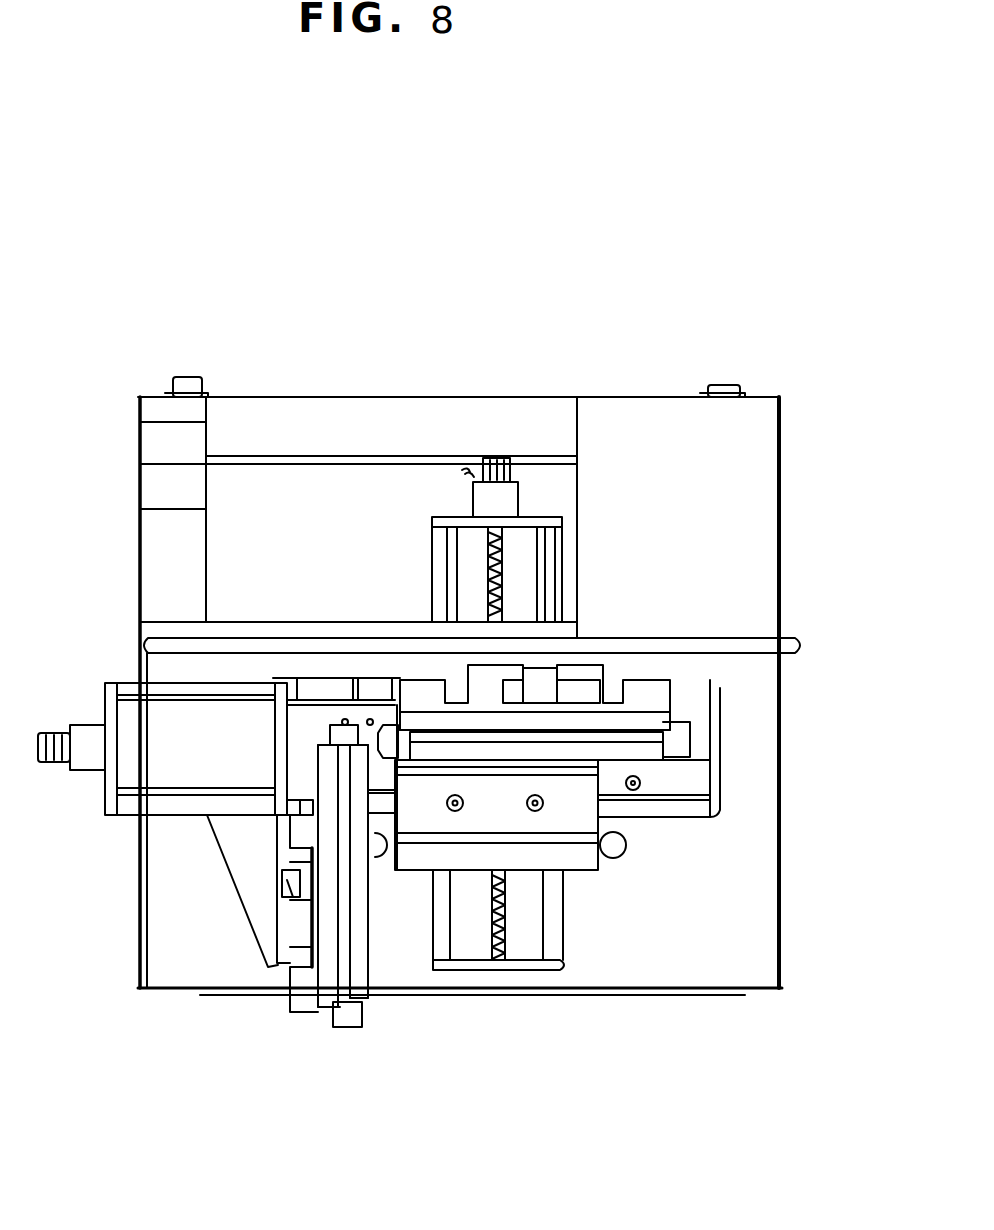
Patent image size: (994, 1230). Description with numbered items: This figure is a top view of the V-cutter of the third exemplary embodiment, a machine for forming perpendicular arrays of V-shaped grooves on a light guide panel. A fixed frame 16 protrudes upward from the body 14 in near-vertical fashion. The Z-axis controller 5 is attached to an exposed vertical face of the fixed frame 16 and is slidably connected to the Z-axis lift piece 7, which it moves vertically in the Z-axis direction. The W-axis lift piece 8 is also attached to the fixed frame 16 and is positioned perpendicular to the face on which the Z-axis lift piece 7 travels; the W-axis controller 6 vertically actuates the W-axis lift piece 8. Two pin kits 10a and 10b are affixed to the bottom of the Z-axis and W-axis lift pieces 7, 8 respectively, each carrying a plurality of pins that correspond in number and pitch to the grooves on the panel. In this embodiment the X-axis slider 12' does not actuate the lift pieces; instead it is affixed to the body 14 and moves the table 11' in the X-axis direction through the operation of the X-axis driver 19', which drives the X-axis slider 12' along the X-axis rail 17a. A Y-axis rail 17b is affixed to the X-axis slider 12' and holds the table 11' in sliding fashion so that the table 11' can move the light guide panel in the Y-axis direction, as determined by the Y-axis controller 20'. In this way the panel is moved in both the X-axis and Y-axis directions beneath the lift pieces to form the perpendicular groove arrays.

The Z-axis controller 5 is at (557, 665).
The W-axis controller 6 is at (280, 900).
The Z-axis lift piece 7 is at (657, 722).
The W-axis lift piece 8 is at (332, 982).
The pin kit 10a is at (680, 738).
The pin kit 10b is at (347, 1025).
The table 11' is at (556, 912).
The X-axis slider 12' is at (572, 982).
The body 14 is at (760, 947).
The fixed frame 16 is at (797, 637).
The X-axis rail 17a is at (677, 807).
The Y-axis rail 17b is at (440, 943).
The X-axis driver 19' is at (174, 732).
The Y-axis controller 20' is at (513, 477).